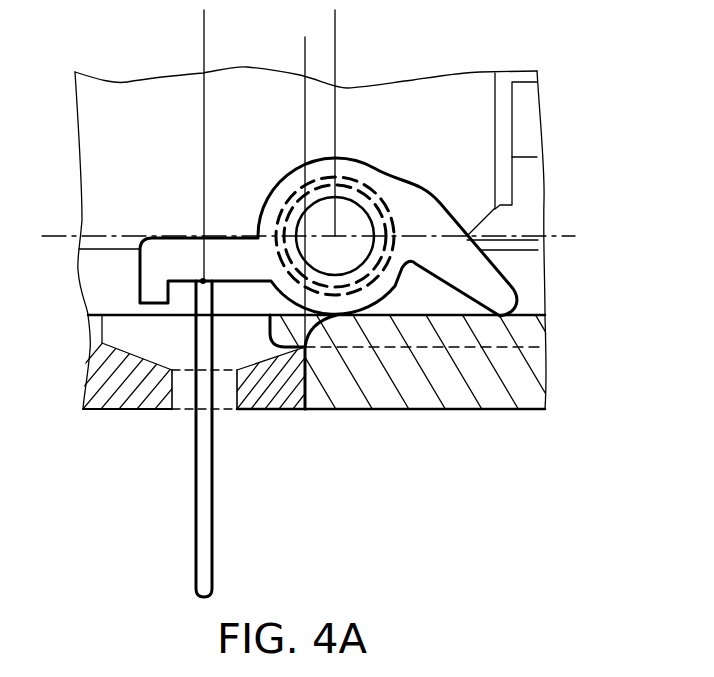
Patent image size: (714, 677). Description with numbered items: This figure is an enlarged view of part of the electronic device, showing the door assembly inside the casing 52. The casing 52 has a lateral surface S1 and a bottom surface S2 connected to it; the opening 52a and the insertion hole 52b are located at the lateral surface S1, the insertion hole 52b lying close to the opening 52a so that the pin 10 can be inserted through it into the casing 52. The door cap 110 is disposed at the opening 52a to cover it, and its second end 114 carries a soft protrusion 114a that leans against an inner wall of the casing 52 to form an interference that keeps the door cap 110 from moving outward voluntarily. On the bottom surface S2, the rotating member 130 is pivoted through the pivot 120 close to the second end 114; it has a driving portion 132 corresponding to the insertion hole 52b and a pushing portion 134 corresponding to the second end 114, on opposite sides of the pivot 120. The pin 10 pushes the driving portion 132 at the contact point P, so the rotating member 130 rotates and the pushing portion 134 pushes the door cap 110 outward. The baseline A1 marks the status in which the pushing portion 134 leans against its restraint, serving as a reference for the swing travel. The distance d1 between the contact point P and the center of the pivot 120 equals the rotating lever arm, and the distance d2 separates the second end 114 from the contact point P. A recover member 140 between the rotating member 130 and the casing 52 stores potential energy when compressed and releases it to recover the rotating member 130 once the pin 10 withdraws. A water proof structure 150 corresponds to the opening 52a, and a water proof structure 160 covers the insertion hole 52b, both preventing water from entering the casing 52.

The pin 10 is at (203, 565).
The casing 52 is at (140, 402).
The opening 52a is at (311, 390).
The insertion hole 52b is at (176, 389).
The door cap 110 is at (488, 397).
The second end 114 is at (359, 364).
The protrusion 114a is at (290, 330).
The pivot 120 is at (357, 223).
The rotating member 130 is at (380, 172).
The driving portion 132 is at (158, 267).
The pushing portion 134 is at (462, 267).
The recover member 140 is at (397, 223).
The water proof structure 150 is at (425, 337).
The water proof structure 160 is at (227, 393).
The contact point P is at (198, 280).
The lateral surface S1 is at (93, 410).
The bottom surface S2 is at (103, 283).
The baseline A1 is at (322, 237).
The distance d1 is at (335, 25).
The distance d2 is at (305, 53).